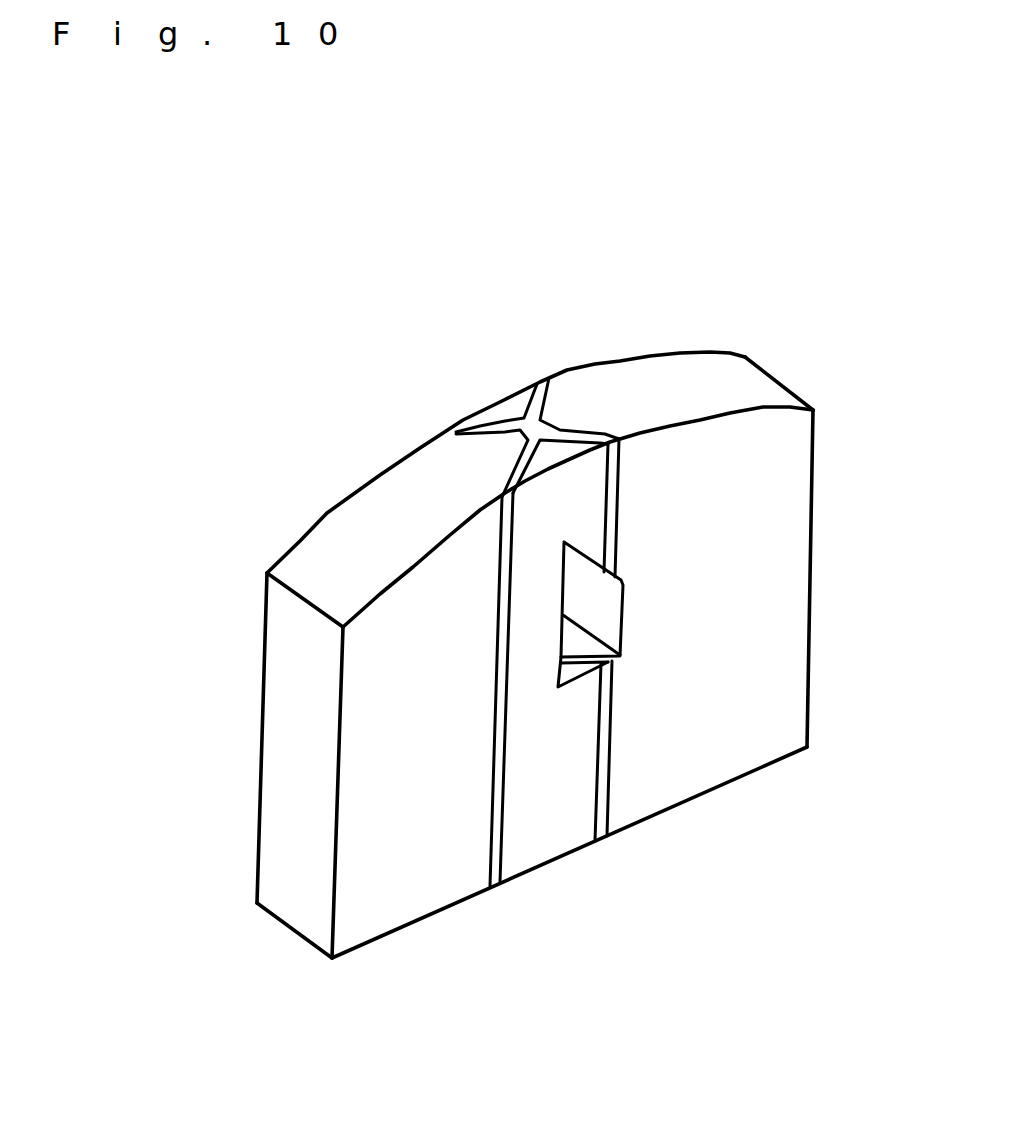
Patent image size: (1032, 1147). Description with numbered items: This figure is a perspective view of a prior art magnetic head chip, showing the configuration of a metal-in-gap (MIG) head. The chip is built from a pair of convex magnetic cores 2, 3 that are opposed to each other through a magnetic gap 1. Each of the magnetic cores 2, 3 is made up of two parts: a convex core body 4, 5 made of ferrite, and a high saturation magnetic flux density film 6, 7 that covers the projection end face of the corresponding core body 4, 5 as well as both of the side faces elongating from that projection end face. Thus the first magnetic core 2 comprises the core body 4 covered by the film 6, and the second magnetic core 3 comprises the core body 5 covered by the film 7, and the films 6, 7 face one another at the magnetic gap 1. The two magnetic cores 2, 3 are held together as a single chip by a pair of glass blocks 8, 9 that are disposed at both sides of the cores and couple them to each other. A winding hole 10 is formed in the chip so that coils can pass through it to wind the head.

The magnetic gap 1 is at (542, 423).
The convex magnetic core 2 is at (267, 635).
The convex magnetic core 3 is at (808, 687).
The convex core body 4 is at (277, 759).
The convex core body 5 is at (782, 523).
The high saturation magnetic flux density film 6 is at (456, 433).
The high saturation magnetic flux density film 7 is at (590, 433).
The glass block 8 is at (505, 408).
The glass block 9 is at (585, 487).
The winding hole 10 is at (605, 597).